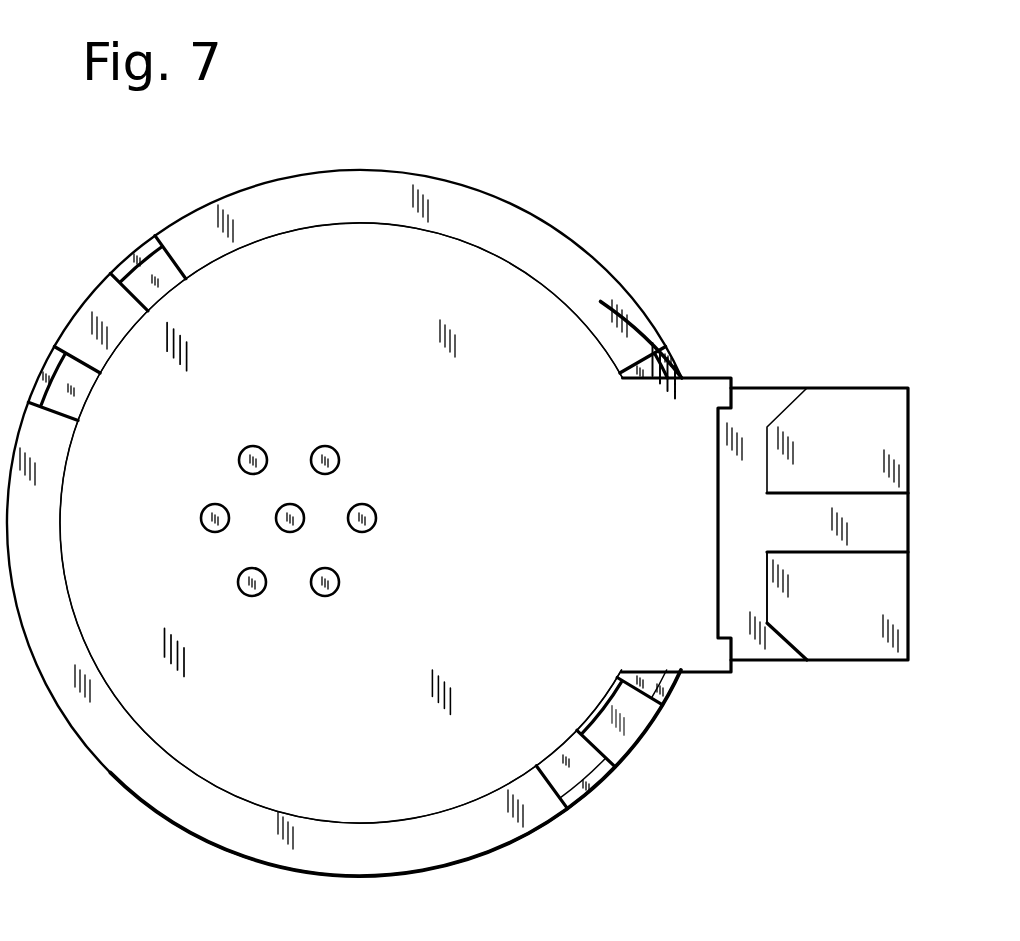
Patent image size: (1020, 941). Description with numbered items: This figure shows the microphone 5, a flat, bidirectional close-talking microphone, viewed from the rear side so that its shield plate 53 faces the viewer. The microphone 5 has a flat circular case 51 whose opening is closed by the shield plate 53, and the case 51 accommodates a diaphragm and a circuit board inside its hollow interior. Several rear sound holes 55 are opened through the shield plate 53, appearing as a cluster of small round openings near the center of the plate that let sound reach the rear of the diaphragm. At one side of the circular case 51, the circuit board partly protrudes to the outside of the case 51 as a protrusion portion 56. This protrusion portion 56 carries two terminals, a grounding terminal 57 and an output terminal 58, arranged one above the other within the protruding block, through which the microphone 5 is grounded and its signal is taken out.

The microphone 5 is at (631, 253).
The case 51 is at (160, 796).
The shield plate 53 is at (486, 272).
The rear sound hole 55 is at (290, 507).
The protrusion portion 56 is at (763, 386).
The grounding terminal 57 is at (865, 644).
The output terminal 58 is at (863, 402).